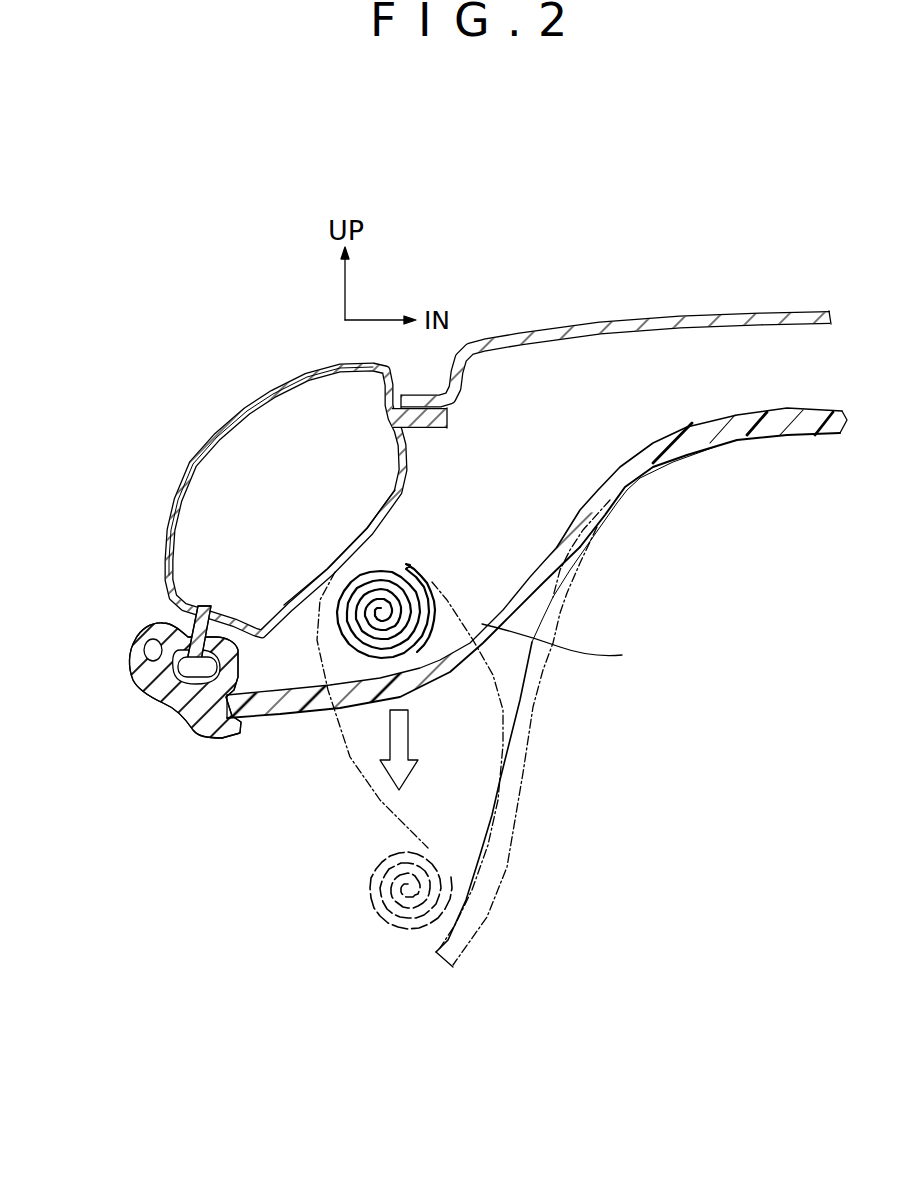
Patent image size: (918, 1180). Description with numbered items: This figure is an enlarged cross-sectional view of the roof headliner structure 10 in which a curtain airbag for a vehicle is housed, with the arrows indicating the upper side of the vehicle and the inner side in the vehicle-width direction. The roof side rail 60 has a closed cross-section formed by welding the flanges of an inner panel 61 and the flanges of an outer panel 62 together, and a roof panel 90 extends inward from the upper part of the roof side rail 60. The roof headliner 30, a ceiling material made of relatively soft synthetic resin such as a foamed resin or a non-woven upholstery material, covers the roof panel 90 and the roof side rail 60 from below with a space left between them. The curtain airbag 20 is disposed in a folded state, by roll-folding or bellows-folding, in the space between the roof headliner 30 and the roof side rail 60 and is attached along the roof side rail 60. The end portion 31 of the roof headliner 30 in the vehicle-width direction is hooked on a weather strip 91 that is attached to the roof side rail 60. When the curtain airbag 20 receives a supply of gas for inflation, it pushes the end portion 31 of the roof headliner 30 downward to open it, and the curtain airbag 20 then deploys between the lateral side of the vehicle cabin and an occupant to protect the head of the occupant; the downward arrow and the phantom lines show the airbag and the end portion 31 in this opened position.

The roof headliner structure 10 is at (616, 526).
The curtain airbag 20 is at (437, 585).
The roof headliner 30 is at (540, 693).
The end portion 31 is at (203, 737).
The roof side rail 60 is at (166, 492).
The inner panel 61 is at (332, 562).
The outer panel 62 is at (215, 432).
The roof panel 90 is at (663, 312).
The weather strip 91 is at (132, 643).